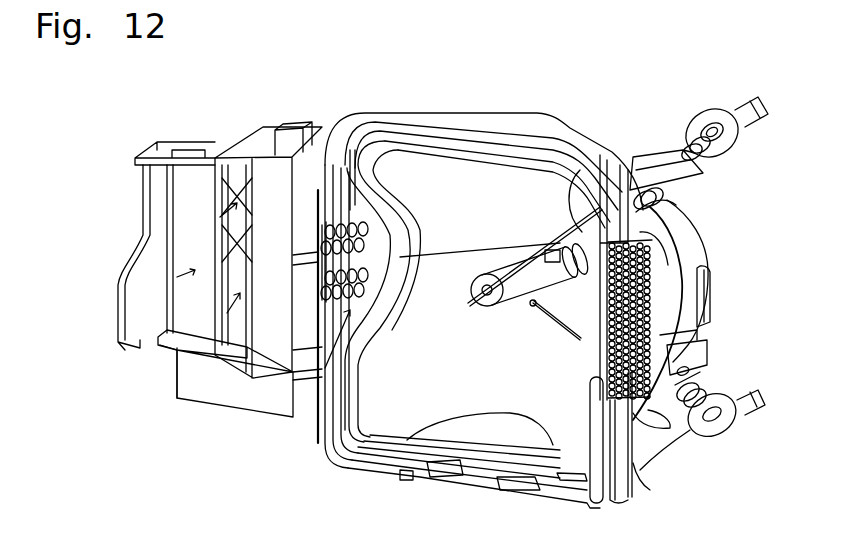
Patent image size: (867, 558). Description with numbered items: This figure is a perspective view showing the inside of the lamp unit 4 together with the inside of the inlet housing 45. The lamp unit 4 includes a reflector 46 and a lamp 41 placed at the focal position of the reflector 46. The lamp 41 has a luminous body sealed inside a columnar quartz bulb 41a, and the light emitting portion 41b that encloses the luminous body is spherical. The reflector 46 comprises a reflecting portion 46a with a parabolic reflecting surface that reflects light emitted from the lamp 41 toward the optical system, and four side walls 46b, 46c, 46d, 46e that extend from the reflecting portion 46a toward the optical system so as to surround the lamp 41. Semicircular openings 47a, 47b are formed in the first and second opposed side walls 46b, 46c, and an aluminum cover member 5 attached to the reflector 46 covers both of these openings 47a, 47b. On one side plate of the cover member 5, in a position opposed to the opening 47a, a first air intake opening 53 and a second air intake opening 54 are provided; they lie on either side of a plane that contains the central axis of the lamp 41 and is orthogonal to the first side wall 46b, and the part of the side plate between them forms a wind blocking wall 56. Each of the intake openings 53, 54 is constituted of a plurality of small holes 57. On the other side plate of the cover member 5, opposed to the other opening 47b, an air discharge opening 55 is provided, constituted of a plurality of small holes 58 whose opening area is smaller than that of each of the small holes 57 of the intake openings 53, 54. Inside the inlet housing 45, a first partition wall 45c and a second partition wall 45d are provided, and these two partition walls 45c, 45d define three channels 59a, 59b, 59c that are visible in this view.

The lamp unit 4 is at (659, 106).
The cover member 5 is at (640, 470).
The lamp 41 is at (541, 312).
The quartz bulb 41a is at (528, 258).
The light emitting portion 41b is at (560, 255).
The inlet housing 45 is at (262, 128).
The first partition wall 45c is at (237, 215).
The second partition wall 45d is at (235, 255).
The reflector 46 is at (515, 120).
The reflecting portion 46a is at (455, 167).
The first side wall 46b is at (350, 118).
The second side wall 46c is at (688, 247).
The side wall 46d is at (487, 112).
The side wall 46e is at (507, 423).
The semicircular opening 47a is at (402, 224).
The semicircular opening 47b is at (683, 293).
The first air intake opening 53 is at (303, 124).
The second air intake opening 54 is at (320, 387).
The air discharge opening 55 is at (703, 347).
The wind blocking wall 56 is at (345, 265).
The small holes 57 is at (330, 230).
The small holes 58 is at (652, 228).
The channel 59a is at (215, 155).
The channel 59b is at (228, 345).
The channel 59c is at (170, 330).